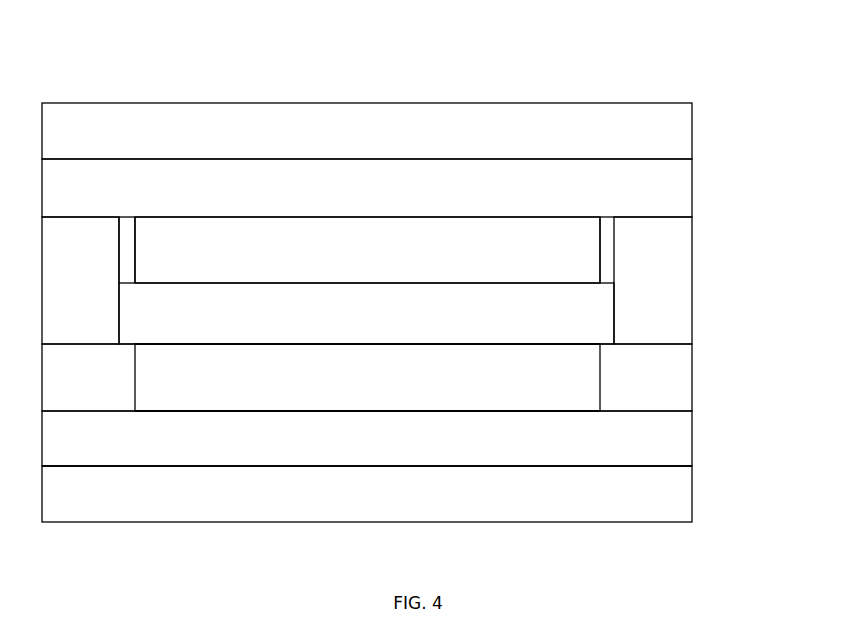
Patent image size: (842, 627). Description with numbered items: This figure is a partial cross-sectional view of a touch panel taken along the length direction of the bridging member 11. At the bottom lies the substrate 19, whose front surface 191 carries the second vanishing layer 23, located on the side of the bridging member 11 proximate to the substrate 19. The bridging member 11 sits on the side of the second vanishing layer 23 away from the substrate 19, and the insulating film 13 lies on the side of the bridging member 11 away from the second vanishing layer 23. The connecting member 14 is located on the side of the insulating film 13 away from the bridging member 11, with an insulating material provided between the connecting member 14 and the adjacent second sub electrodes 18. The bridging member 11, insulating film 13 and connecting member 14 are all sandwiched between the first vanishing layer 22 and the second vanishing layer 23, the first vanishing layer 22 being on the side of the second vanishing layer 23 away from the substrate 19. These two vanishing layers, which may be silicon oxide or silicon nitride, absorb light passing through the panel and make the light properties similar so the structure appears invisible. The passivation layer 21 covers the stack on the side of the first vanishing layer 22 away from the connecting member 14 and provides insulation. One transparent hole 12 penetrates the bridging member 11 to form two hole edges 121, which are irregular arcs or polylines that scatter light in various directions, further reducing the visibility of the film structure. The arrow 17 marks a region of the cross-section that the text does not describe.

The passivation layer 21 is at (637, 135).
The first vanishing layer 22 is at (637, 190).
The second sub electrode 18 is at (637, 258).
The connecting member 14 is at (376, 245).
The insulating film 13 is at (592, 312).
The gap 17 is at (86, 232).
The bridging member 11 is at (642, 362).
The transparent hole 12 is at (560, 390).
The hole edge 121 is at (430, 343).
The second vanishing layer 23 is at (650, 440).
The substrate 19 is at (653, 505).
The front surface 191 is at (553, 466).